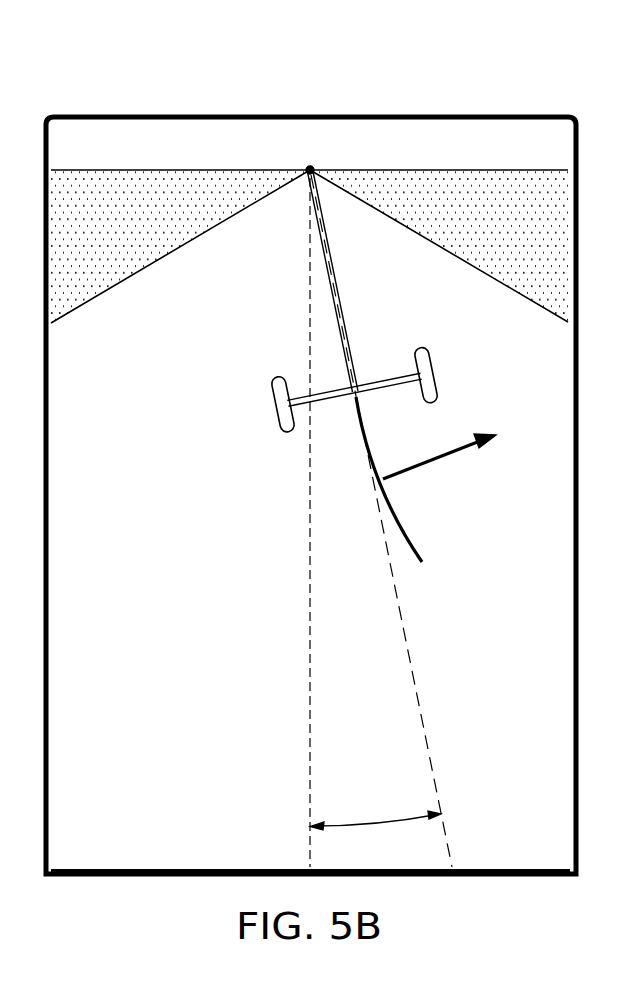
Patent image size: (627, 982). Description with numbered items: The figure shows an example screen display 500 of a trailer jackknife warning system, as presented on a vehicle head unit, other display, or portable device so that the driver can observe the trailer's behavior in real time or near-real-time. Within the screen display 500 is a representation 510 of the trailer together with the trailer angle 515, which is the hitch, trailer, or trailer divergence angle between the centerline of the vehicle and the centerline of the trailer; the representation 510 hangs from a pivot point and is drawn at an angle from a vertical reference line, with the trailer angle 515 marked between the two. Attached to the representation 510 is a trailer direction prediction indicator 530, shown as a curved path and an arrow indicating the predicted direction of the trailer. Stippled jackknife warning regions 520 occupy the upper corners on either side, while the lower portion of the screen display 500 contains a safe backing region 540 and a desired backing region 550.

The screen display 500 is at (78, 87).
The representation of the trailer 510 is at (340, 293).
The trailer divergence angle 515 is at (377, 820).
The jackknife warning regions 520 is at (132, 267).
The trailer direction prediction indicator 530 is at (425, 460).
The safe backing region 540 is at (125, 852).
The desired backing region 550 is at (500, 852).